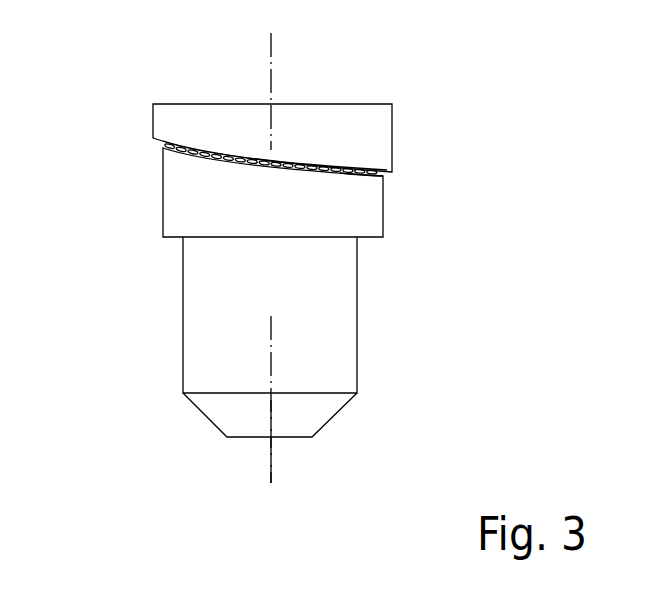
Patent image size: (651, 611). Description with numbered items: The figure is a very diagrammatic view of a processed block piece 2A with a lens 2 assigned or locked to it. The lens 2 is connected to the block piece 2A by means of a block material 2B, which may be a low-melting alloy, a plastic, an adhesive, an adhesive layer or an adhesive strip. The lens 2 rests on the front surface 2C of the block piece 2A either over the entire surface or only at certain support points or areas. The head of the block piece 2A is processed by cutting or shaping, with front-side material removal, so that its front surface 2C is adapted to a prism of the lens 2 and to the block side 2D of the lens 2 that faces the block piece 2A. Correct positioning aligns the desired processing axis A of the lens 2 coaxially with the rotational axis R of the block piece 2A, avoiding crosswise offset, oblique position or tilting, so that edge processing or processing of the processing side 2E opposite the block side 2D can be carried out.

The lens 2 is at (188, 128).
The block piece 2A is at (203, 222).
The block material 2B is at (385, 173).
The front surface 2C is at (201, 159).
The block side 2D is at (234, 154).
The processing side 2E is at (348, 103).
The processing axis A is at (270, 48).
The rotational axis R is at (268, 477).